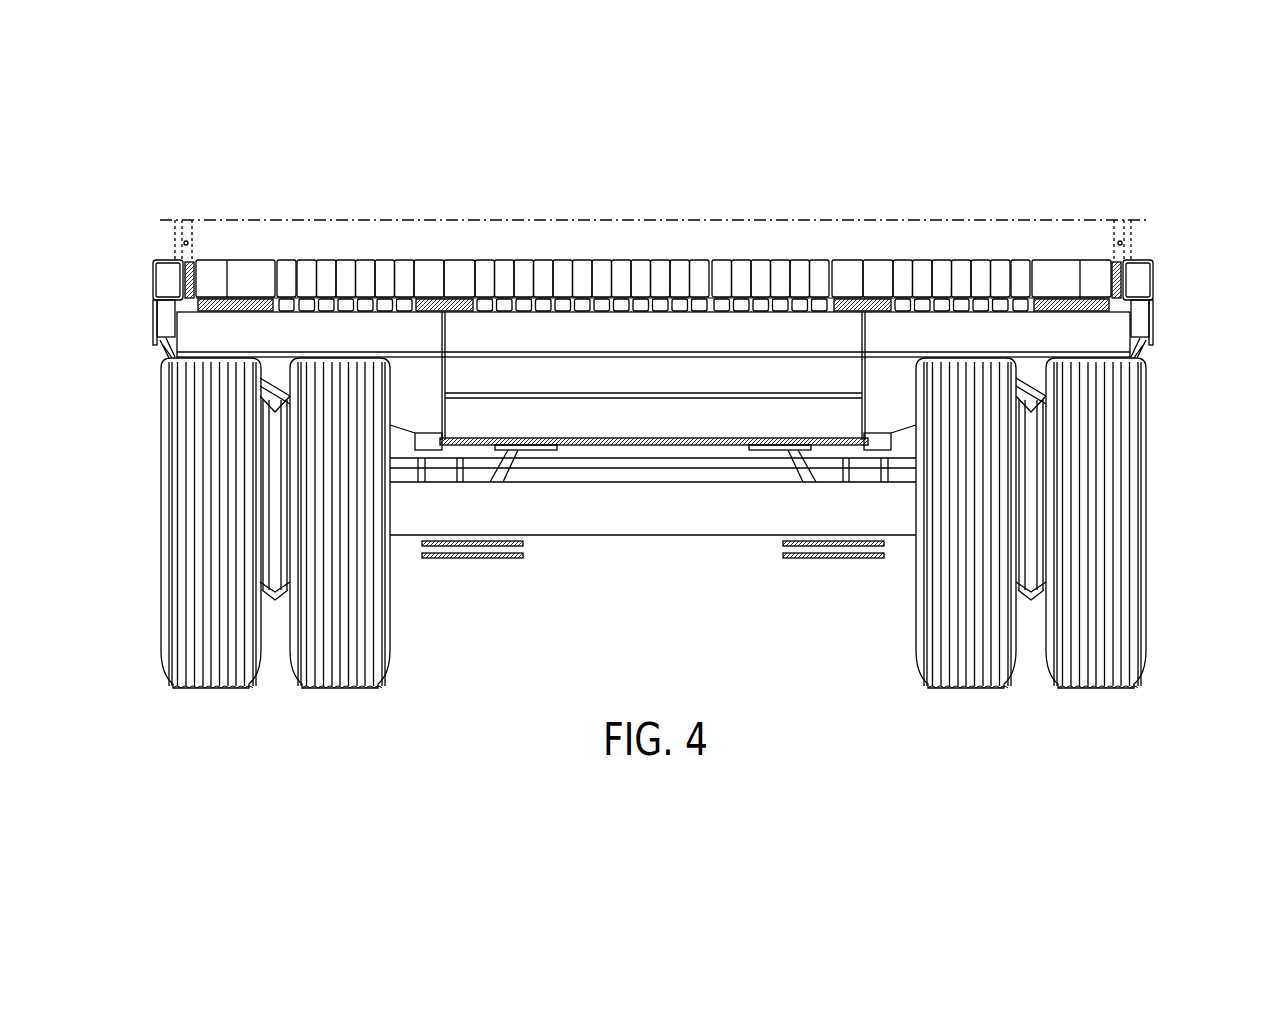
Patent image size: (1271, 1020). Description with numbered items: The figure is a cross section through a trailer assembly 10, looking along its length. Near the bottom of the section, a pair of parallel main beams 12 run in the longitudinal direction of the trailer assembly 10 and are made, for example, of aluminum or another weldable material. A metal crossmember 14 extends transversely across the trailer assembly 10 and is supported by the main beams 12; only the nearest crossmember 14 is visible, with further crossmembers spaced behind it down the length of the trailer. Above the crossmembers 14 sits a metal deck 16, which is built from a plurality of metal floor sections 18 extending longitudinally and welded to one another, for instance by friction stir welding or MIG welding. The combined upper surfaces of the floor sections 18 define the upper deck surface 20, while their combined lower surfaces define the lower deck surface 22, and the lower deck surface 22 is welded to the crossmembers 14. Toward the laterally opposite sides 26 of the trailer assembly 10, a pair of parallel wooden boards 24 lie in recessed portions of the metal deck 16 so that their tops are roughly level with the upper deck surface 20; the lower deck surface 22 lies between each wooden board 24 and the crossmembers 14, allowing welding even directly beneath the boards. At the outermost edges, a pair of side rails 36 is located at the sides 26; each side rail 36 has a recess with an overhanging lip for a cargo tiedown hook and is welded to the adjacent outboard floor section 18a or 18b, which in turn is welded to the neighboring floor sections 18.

The trailer assembly 10 is at (1152, 143).
The main beams 12 is at (447, 373).
The crossmembers 14 is at (1105, 338).
The metal deck 16 is at (803, 251).
The metal floor sections 18 is at (344, 268).
The floor section 18a is at (283, 268).
The floor section 18b is at (1020, 268).
The upper deck surface 20 is at (641, 283).
The lower deck surface 22 is at (661, 316).
The wooden boards 24 is at (248, 270).
The laterally opposite sides 26 is at (141, 296).
The side rails 36 is at (153, 318).